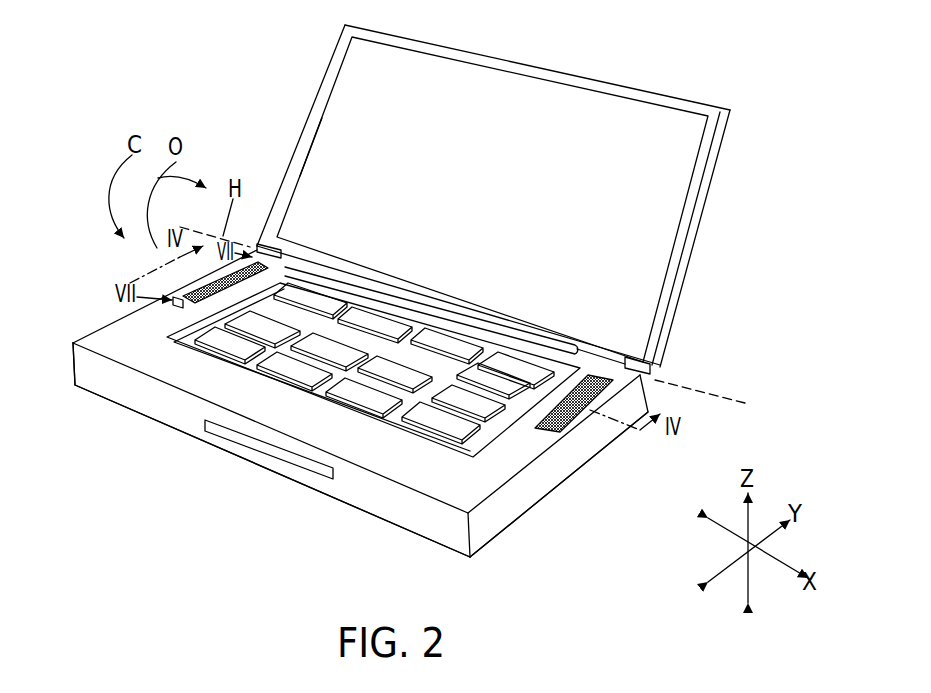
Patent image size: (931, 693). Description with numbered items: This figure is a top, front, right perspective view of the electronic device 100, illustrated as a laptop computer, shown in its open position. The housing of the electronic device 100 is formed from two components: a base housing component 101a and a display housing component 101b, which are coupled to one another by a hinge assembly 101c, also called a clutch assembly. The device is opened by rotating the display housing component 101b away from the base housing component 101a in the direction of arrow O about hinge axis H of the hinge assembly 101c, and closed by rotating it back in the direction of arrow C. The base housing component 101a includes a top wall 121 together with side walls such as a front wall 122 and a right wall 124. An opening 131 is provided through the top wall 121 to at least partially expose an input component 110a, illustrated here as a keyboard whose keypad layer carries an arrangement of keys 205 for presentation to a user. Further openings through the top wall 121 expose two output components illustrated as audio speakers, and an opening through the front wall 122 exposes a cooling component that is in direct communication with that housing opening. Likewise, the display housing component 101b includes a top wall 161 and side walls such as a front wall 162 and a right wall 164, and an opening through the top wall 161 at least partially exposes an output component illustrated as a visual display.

The electronic device 100 is at (507, 607).
The base housing component 101a is at (615, 453).
The display housing component 101b is at (705, 252).
The hinge assembly 101c is at (662, 373).
The input component 110a is at (160, 322).
The top wall 121 is at (458, 495).
The front wall 122 is at (97, 383).
The right wall 124 is at (520, 507).
The opening 131 is at (402, 432).
The top wall 161 is at (330, 68).
The front wall 162 is at (499, 50).
The right wall 164 is at (720, 148).
The key 205 is at (300, 290).